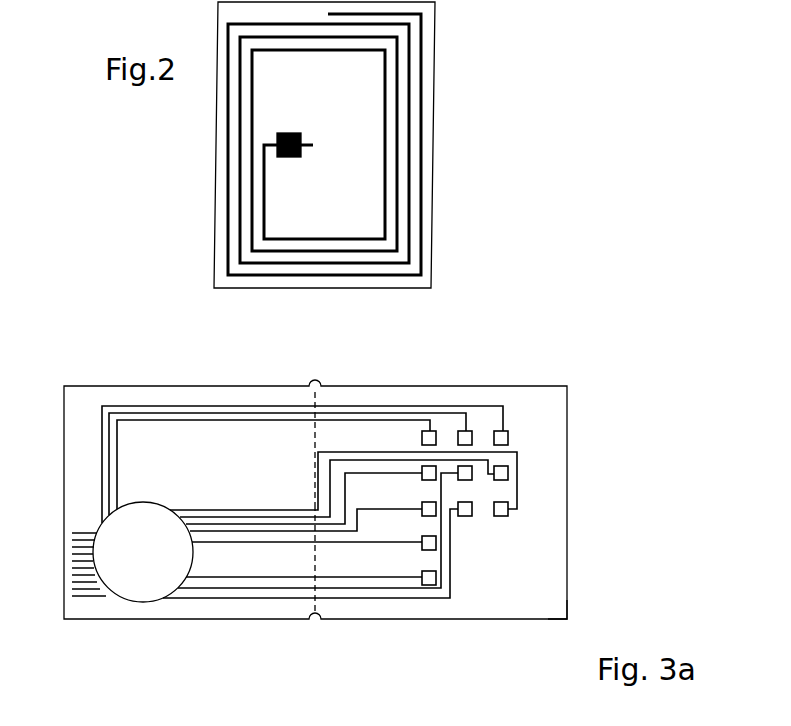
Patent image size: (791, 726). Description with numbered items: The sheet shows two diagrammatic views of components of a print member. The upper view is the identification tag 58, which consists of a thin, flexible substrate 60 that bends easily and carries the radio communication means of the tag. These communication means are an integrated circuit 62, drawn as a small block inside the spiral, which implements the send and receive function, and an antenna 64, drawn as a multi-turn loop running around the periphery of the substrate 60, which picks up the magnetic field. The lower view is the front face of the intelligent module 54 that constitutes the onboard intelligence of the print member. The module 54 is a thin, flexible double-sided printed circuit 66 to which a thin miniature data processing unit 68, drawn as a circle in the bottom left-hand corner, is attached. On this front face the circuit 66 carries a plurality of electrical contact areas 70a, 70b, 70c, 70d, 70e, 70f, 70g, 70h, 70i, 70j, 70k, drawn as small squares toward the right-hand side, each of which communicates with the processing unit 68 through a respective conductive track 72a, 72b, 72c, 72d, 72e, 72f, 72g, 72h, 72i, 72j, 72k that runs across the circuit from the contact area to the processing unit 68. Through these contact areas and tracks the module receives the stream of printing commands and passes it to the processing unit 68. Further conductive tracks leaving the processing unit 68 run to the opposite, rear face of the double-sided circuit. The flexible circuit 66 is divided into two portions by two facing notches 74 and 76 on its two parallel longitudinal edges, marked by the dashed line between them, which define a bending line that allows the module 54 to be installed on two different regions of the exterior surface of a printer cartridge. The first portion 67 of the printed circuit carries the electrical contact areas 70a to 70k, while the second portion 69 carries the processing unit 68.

In FIG. 3A, the intelligent module 54 is at (538, 346).
In FIG. 2, the identification tag 58 is at (373, 145).
In FIG. 2, the substrate 60 is at (432, 104).
In FIG. 2, the integrated circuit 62 is at (295, 133).
In FIG. 2, the antenna 64 is at (422, 218).
In FIG. 3A, the flexible circuit 66 is at (568, 578).
In FIG. 3A, the first portion 67 is at (562, 621).
In FIG. 3A, the data processing unit 68 is at (105, 532).
In FIG. 3A, the second portion 69 is at (92, 612).
In FIG. 3A, the electrical contact area 70a is at (432, 431).
In FIG. 3A, the electrical contact area 70b is at (422, 470).
In FIG. 3A, the electrical contact area 70c is at (430, 551).
In FIG. 3A, the electrical contact area 70d is at (428, 516).
In FIG. 3A, the electrical contact area 70e is at (425, 586).
In FIG. 3A, the electrical contact area 70f is at (468, 431).
In FIG. 3A, the electrical contact area 70g is at (466, 481).
In FIG. 3A, the electrical contact area 70h is at (462, 516).
In FIG. 3A, the electrical contact area 70i is at (508, 438).
In FIG. 3A, the electrical contact area 70j is at (508, 473).
In FIG. 3A, the electrical contact area 70k is at (500, 516).
In FIG. 3A, the conductive track 72a is at (126, 418).
In FIG. 3A, the conductive track 72b is at (207, 524).
In FIG. 3A, the conductive track 72c is at (195, 544).
In FIG. 3A, the conductive track 72d is at (236, 540).
In FIG. 3A, the conductive track 72e is at (210, 577).
In FIG. 3A, the conductive track 72f is at (237, 413).
In FIG. 3A, the conductive track 72g is at (333, 600).
In FIG. 3A, the conductive track 72h is at (353, 600).
In FIG. 3A, the conductive track 72i is at (186, 406).
In FIG. 3A, the conductive track 72j is at (275, 517).
In FIG. 3A, the conductive track 72k is at (243, 511).
In FIG. 3A, the notch 74 is at (316, 386).
In FIG. 3A, the notch 76 is at (310, 620).